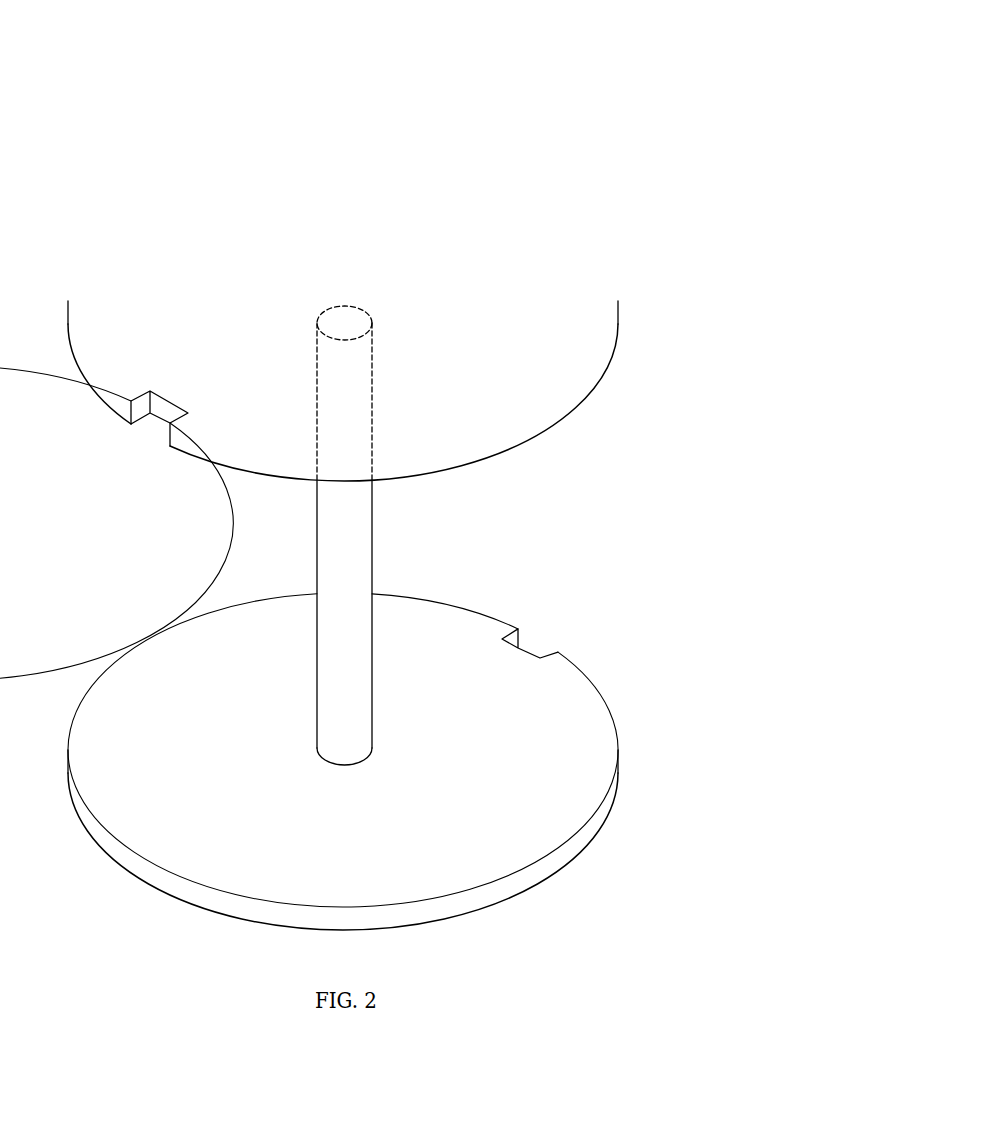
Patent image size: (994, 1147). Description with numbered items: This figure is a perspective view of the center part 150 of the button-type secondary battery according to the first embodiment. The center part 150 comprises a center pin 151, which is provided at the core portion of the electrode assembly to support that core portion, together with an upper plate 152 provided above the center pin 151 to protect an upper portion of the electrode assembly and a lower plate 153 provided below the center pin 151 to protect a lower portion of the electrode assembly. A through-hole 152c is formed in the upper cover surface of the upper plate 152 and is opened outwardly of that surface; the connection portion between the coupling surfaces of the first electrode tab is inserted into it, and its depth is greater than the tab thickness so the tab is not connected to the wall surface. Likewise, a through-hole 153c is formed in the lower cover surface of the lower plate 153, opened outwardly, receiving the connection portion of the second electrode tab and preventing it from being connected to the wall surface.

The center part 150 is at (562, 42).
The center pin 151 is at (347, 520).
The upper plate 152 is at (355, 482).
The through-hole 152c is at (153, 425).
The lower plate 153 is at (388, 745).
The through-hole 153c is at (531, 650).